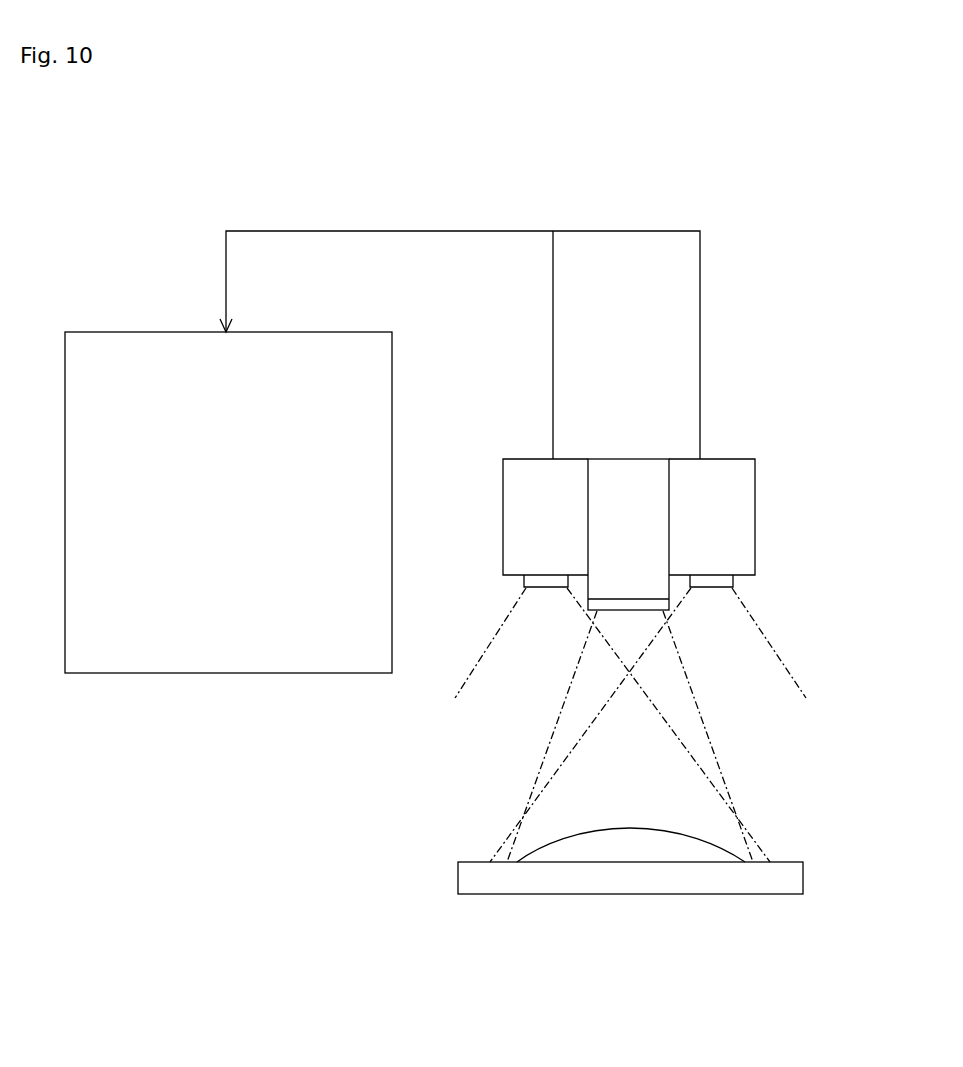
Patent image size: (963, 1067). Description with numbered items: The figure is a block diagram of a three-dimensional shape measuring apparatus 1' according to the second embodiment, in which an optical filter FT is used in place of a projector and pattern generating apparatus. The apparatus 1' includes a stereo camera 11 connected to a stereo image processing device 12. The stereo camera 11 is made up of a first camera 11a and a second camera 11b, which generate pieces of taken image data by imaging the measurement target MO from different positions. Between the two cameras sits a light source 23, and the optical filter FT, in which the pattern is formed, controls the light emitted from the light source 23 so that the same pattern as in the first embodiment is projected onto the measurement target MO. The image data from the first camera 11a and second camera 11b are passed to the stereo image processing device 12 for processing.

The three-dimensional shape measuring apparatus 1' is at (514, 303).
The stereo image processing device 12 is at (297, 332).
The stereo camera 11 is at (651, 623).
The first camera 11a is at (565, 487).
The second camera 11b is at (738, 459).
The light source 23 is at (660, 536).
The optical filter FT is at (660, 607).
The measurement target MO is at (630, 828).